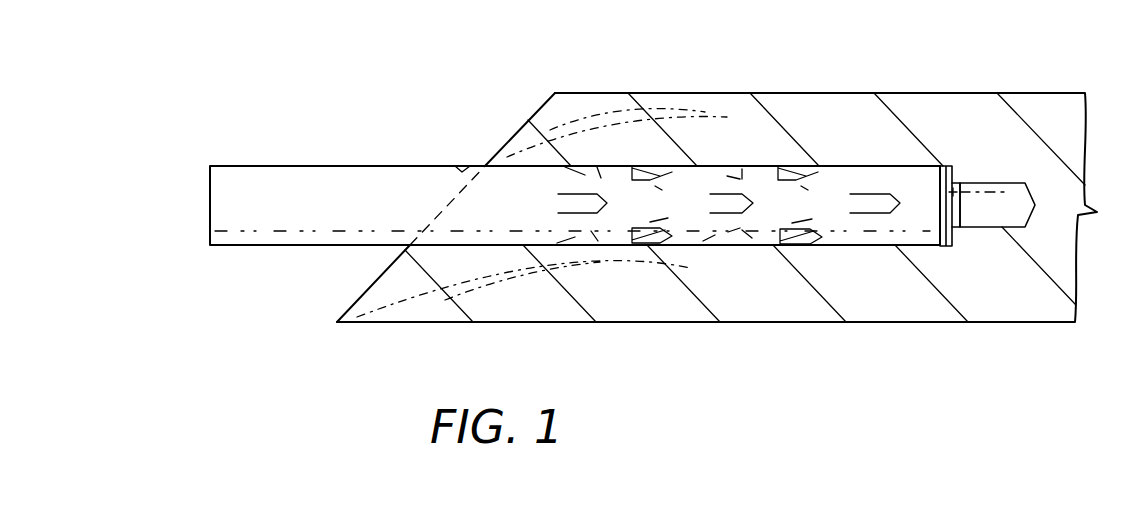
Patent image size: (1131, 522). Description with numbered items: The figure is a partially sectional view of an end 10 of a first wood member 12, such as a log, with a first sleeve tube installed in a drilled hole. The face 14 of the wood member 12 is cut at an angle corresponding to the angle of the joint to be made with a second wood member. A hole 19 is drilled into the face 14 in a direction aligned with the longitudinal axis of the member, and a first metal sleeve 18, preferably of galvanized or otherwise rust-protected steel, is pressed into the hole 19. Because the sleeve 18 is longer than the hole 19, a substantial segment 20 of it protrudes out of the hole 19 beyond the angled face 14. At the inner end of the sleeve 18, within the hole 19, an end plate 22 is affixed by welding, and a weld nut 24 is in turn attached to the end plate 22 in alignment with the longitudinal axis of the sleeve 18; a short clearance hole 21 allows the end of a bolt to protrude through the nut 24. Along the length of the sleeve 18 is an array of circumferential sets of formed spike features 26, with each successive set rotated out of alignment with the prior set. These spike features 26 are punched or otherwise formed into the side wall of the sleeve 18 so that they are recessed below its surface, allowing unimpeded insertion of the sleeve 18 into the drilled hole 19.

The end 10 is at (567, 93).
The first wood member 12 is at (772, 325).
The face 14 is at (535, 112).
The first metal sleeve 18 is at (462, 203).
The hole 19 is at (912, 245).
The segment 20 is at (237, 173).
The clearance hole 21 is at (980, 227).
The end plate 22 is at (953, 195).
The weld nut 24 is at (957, 168).
The spike features 26 is at (722, 198).